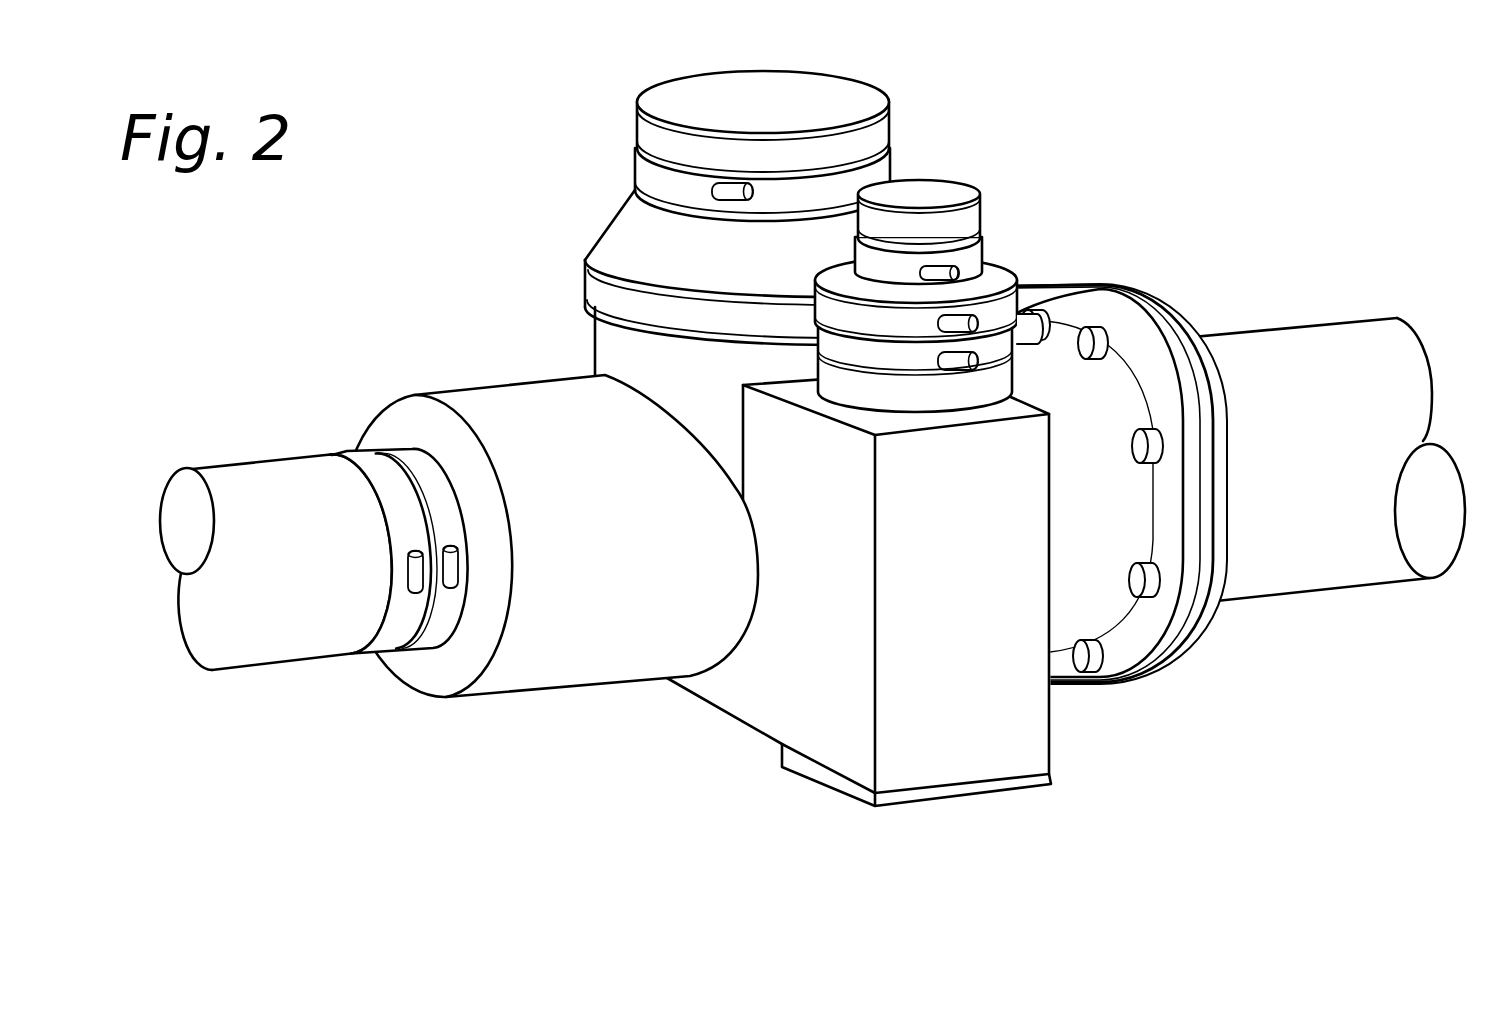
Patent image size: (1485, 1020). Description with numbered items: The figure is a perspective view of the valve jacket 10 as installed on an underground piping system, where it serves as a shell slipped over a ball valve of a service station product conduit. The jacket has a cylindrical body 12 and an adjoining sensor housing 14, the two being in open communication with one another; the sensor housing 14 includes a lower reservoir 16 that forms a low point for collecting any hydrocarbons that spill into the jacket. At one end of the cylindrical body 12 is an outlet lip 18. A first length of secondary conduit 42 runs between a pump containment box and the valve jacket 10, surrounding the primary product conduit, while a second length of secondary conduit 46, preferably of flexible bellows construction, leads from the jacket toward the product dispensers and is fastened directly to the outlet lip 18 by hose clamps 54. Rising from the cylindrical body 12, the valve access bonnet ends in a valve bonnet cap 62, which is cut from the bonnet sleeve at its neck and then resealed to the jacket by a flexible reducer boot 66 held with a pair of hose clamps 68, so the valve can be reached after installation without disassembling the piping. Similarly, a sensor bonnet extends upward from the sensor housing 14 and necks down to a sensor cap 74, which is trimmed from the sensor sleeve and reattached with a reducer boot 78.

The valve jacket 10 is at (812, 445).
The cylindrical body 12 is at (540, 395).
The sensor housing 14 is at (1022, 698).
The lower reservoir 16 is at (971, 790).
The outlet lip 18 is at (1100, 293).
The first length of secondary conduit 42 is at (1297, 327).
The second length of secondary conduit 46 is at (270, 668).
The hose clamps 54 is at (368, 660).
The valve bonnet cap 62 is at (668, 142).
The flexible reducer boot 66 is at (600, 240).
The hose clamps 68 is at (632, 168).
The sensor cap 74 is at (915, 232).
The reducer boot 78 is at (1010, 275).